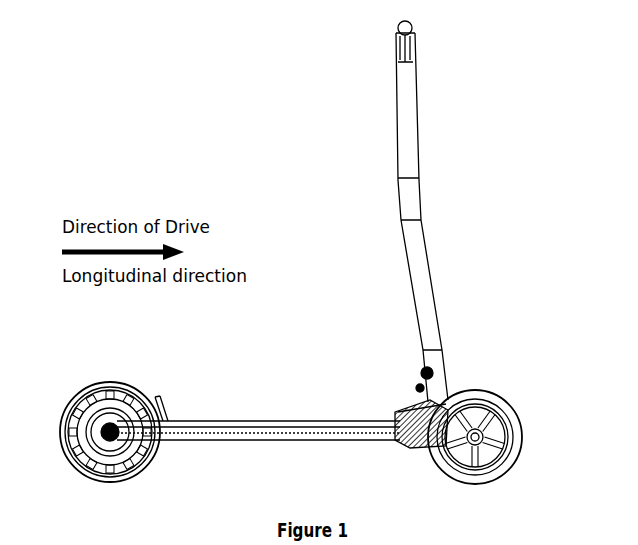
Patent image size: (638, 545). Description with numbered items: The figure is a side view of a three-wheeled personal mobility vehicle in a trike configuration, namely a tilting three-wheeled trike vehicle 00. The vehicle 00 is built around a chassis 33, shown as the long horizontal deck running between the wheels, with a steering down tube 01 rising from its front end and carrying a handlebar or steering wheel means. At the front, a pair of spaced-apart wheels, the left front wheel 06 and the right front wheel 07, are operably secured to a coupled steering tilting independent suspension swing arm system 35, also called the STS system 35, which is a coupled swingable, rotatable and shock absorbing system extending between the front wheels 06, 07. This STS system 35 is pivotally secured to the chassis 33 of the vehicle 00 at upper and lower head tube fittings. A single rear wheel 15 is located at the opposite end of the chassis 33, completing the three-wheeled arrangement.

The tilting three-wheeled trike vehicle 00 is at (342, 267).
The steering down tube 01 is at (419, 190).
The coupled steering tilting independent suspension swing arm system 35 is at (443, 370).
The chassis 33 is at (288, 428).
The rear wheel 15 is at (102, 386).
The left front wheel 06 is at (489, 391).
The right front wheel 07 is at (482, 392).